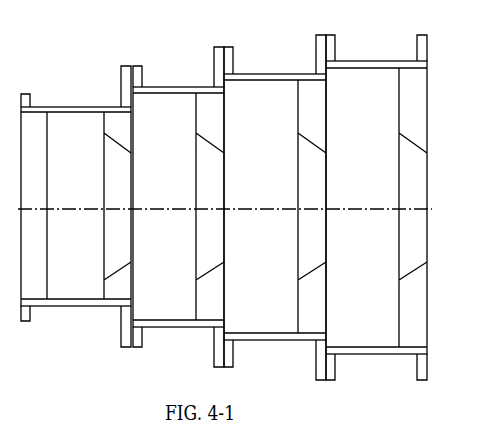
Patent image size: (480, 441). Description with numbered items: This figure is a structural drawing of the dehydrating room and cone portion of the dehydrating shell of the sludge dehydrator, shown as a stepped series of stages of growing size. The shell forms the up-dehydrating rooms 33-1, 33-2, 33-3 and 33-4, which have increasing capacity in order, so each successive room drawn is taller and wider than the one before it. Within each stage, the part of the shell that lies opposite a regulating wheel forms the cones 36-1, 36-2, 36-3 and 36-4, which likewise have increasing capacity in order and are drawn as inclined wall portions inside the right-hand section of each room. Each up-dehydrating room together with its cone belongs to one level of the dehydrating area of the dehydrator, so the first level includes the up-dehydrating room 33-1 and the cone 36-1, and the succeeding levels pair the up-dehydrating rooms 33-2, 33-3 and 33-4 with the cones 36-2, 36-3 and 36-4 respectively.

The up-dehydrating room 33-1 is at (63, 116).
The up-dehydrating room 33-2 is at (155, 104).
The up-dehydrating room 33-3 is at (252, 84).
The fourth stage casing segment 33-4 is at (351, 81).
The cone 36-1 is at (107, 133).
The cone 36-2 is at (197, 131).
The cone 36-3 is at (305, 133).
The fourth stage inclined vane 36-4 is at (408, 138).